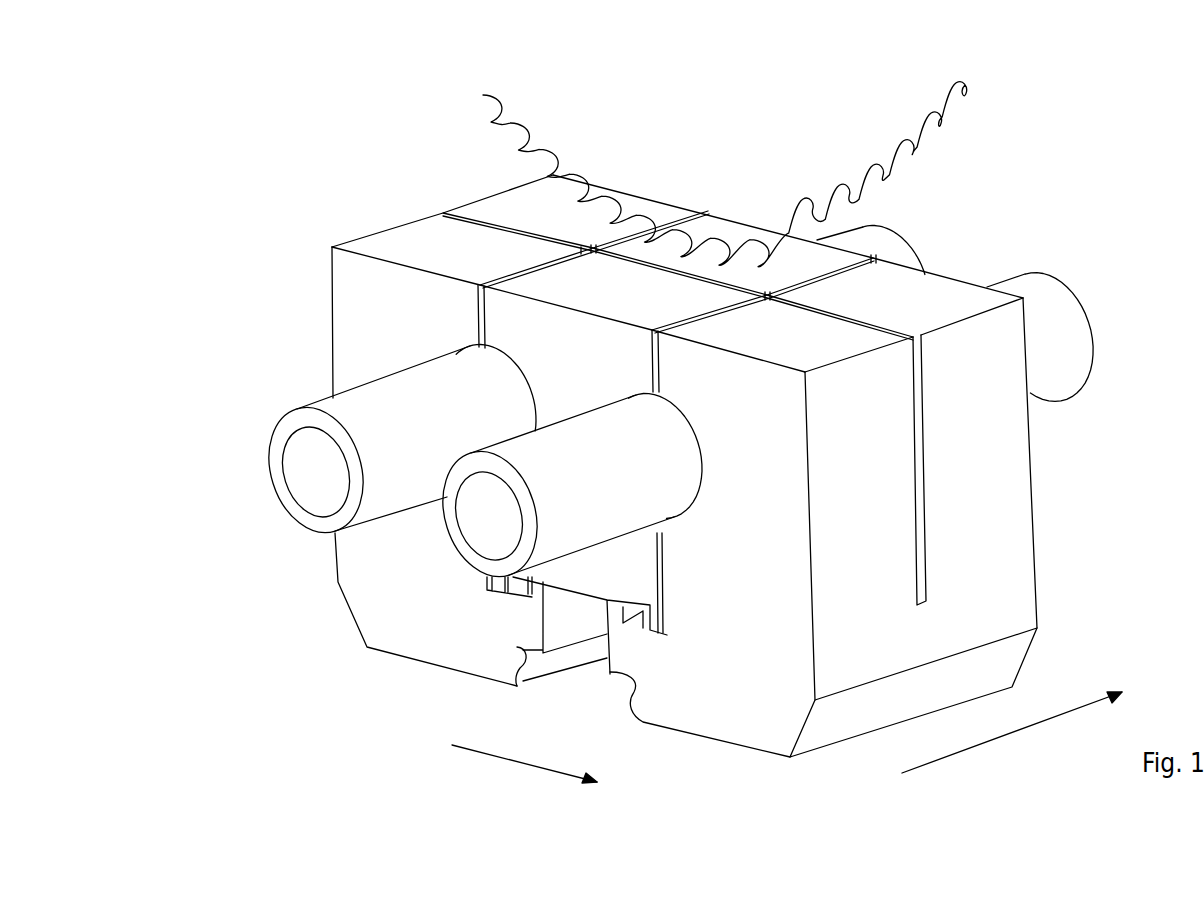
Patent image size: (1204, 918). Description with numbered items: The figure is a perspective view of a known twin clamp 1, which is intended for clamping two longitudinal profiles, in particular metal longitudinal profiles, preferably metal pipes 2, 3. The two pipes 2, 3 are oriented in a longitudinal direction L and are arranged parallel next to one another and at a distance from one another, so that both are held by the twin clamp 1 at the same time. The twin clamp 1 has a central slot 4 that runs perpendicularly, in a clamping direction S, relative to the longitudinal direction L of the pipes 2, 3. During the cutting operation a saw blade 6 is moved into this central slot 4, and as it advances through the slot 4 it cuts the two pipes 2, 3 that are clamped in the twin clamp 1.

The twin clamp 1 is at (1040, 190).
The pipe 2 is at (315, 477).
The pipe 3 is at (490, 520).
The central slot 4 is at (915, 450).
The saw blade 6 is at (865, 118).